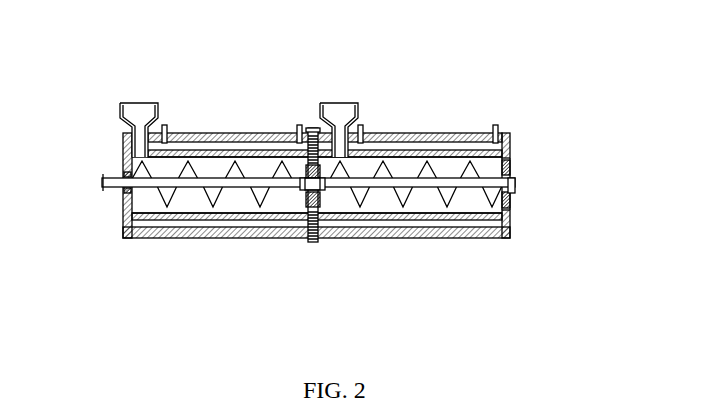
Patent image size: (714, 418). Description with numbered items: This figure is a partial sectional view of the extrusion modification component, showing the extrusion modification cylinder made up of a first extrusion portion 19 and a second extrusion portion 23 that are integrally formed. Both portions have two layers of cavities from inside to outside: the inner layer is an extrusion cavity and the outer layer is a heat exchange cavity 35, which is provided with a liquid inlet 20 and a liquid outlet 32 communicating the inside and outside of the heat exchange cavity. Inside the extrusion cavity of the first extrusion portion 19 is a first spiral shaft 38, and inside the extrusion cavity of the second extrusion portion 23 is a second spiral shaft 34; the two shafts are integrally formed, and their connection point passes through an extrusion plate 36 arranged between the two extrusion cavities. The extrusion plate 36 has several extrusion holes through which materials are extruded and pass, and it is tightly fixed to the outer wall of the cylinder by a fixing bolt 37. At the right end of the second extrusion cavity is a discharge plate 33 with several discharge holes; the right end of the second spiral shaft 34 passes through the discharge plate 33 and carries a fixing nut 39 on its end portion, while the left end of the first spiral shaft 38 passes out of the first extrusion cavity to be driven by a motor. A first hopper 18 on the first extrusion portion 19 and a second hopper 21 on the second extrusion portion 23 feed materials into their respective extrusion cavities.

The first hopper 18 is at (120, 105).
The first extrusion portion 19 is at (145, 238).
The liquid inlet 20 is at (497, 125).
The second hopper 21 is at (357, 107).
The second extrusion portion 23 is at (507, 238).
The liquid outlet 32 is at (363, 125).
The discharge plate 33 is at (512, 167).
The second spiral shaft 34 is at (447, 192).
The heat exchange cavity 35 is at (402, 217).
The extrusion plate 36 is at (322, 206).
The fixing bolt 37 is at (324, 242).
The first spiral shaft 38 is at (210, 197).
The fixing nut 39 is at (513, 185).